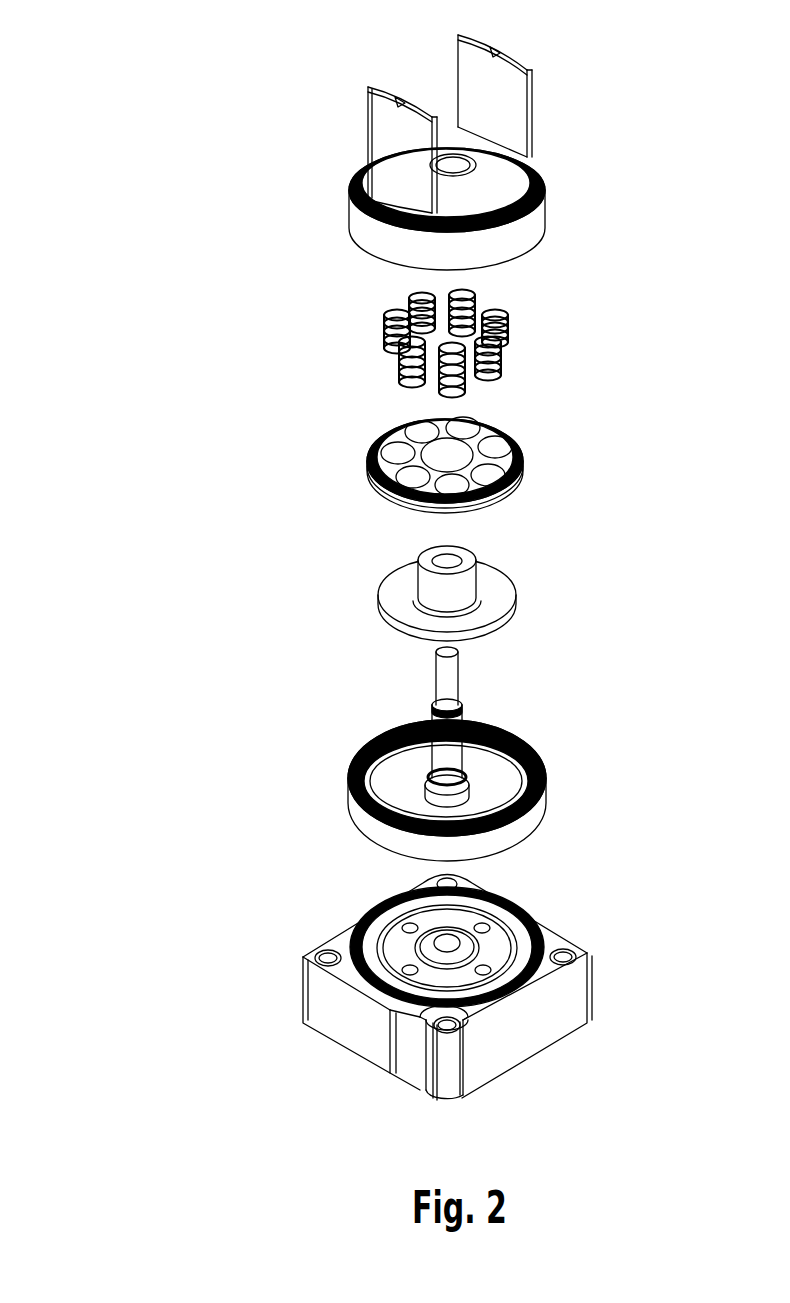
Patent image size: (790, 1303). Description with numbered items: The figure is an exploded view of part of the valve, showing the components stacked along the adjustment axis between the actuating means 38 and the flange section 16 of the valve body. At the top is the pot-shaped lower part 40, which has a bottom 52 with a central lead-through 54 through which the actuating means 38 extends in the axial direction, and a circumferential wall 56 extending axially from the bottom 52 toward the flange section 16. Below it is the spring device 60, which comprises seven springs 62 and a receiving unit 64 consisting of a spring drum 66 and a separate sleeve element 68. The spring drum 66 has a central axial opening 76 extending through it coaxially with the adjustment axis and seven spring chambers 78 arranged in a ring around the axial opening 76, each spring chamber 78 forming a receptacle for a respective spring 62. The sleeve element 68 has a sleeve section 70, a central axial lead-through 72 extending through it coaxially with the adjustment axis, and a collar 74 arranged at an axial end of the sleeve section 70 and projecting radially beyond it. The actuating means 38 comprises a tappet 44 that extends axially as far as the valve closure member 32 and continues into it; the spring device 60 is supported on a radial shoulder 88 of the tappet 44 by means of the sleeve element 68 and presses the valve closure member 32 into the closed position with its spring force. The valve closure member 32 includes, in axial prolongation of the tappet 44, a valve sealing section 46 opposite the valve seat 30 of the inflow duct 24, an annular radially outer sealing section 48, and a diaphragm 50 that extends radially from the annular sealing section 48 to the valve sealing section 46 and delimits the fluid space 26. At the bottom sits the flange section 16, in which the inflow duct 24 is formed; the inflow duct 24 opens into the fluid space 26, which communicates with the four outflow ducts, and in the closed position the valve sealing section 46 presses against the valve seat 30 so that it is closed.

The flange section 16 is at (282, 1000).
The inflow duct 24 is at (487, 910).
The fluid space 26 is at (497, 952).
The valve seat 30 is at (438, 940).
The valve closure member 32 is at (350, 800).
The actuating means 38 is at (425, 692).
The pot-shaped lower part 40 is at (342, 197).
The tappet 44 is at (455, 733).
The valve sealing section 46 is at (463, 793).
The annular radially outer sealing section 48 is at (528, 825).
The diaphragm 50 is at (382, 788).
The bottom 52 is at (503, 182).
The central lead-through 54 is at (478, 170).
The circumferential wall 56 is at (535, 215).
The spring device 60 is at (135, 490).
The springs 62 is at (418, 298).
The receiving unit 64 is at (305, 535).
The spring drum 66 is at (375, 485).
The sleeve element 68 is at (388, 600).
The sleeve section 70 is at (460, 590).
The central axial lead-through 72 is at (467, 553).
The collar 74 is at (488, 612).
The central axial opening 76 is at (460, 452).
The spring chambers 78 is at (465, 430).
The radial shoulder 88 is at (468, 778).